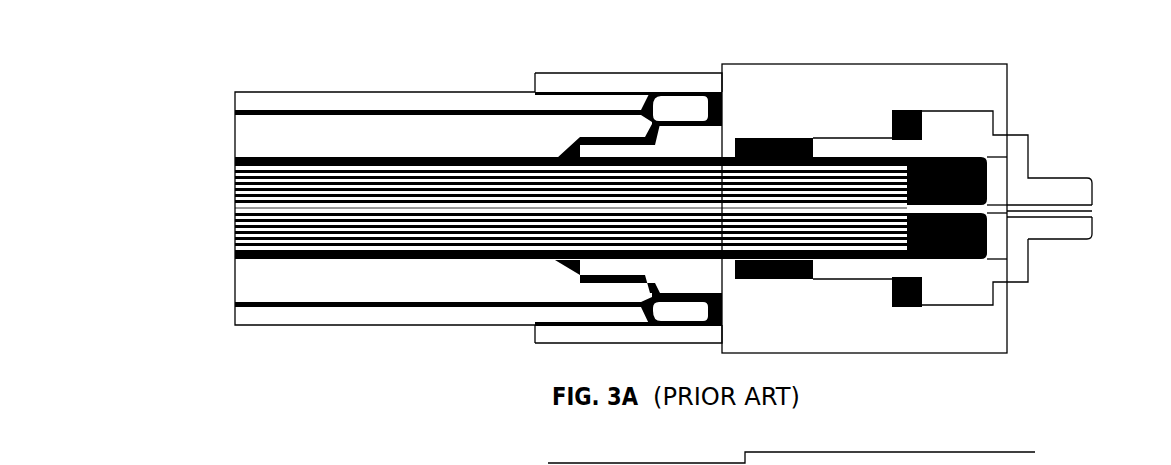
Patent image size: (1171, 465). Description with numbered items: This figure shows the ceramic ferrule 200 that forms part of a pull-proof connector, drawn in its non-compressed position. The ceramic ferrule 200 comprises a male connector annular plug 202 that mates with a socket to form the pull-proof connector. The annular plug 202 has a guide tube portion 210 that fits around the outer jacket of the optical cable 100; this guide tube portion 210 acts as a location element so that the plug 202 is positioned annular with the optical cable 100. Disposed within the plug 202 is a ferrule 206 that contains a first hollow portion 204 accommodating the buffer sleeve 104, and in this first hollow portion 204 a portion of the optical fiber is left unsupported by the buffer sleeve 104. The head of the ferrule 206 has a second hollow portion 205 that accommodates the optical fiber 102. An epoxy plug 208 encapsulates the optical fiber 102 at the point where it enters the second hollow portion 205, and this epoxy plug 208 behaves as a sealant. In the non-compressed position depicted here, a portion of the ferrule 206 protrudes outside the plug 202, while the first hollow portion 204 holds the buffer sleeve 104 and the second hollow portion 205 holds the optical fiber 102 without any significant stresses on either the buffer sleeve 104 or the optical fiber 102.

The optical cable 100 is at (243, 373).
The buffer sleeve 104 is at (233, 246).
The guide tube portion 210 is at (613, 74).
The ceramic ferrule 200 is at (1051, 78).
The male connector annular plug 202 is at (832, 333).
The first hollow portion 204 is at (945, 247).
The epoxy plug 208 is at (997, 177).
The optical fiber 102 is at (1070, 203).
The second hollow portion 205 is at (1028, 215).
The ferrule 206 is at (1078, 230).